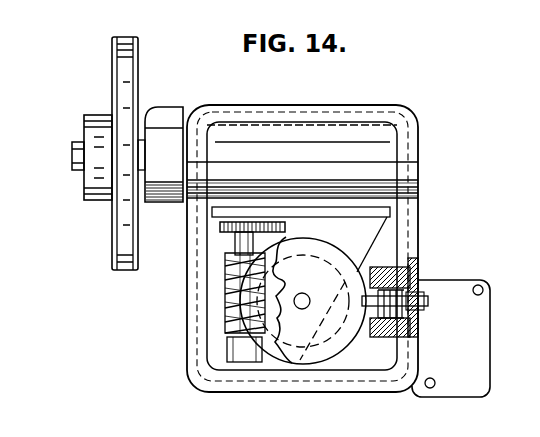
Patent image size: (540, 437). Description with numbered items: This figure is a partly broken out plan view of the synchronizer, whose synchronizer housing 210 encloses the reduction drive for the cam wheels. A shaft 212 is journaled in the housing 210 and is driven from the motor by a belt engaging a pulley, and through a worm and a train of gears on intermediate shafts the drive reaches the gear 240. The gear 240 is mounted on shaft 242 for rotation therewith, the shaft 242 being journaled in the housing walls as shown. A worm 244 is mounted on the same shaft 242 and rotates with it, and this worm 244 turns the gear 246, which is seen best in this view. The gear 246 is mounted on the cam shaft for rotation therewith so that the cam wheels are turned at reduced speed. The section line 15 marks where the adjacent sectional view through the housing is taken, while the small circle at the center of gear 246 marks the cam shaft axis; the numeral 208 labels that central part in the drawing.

The section line 15- 15 is at (211, 57).
The pivot pin 208 is at (314, 291).
The synchronizer housing 210 is at (418, 217).
The shaft 212 is at (78, 156).
The gear 240 is at (285, 228).
The shaft 242 is at (235, 245).
The worm 244 is at (225, 300).
The gear 246 is at (278, 318).